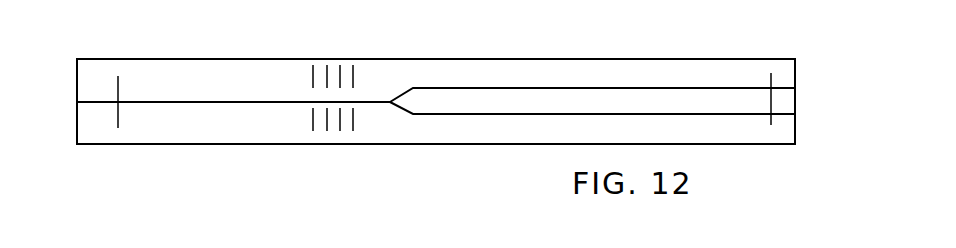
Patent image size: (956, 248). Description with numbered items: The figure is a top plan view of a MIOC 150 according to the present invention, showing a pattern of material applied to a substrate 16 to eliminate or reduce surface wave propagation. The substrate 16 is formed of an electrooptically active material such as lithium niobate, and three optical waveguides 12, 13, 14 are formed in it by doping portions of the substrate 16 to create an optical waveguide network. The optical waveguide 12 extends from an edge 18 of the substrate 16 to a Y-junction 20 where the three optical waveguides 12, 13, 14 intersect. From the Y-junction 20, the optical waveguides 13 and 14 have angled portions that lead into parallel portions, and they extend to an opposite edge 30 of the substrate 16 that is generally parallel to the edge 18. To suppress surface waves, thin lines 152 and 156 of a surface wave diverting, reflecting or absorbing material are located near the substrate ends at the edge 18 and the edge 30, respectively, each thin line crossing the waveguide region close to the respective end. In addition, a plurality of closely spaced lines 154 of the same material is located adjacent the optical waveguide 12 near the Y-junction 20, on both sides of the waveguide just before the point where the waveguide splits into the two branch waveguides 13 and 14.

The MIOC 150 is at (256, 164).
The thin line 152 is at (118, 85).
The closely spaced lines 154 is at (306, 82).
The thin line 156 is at (771, 80).
The optical waveguide 14 is at (443, 88).
The optical waveguide 13 is at (500, 114).
The optical waveguide 12 is at (167, 103).
The substrate 16 is at (277, 144).
The edge 18 is at (77, 131).
The Y-junction 20 is at (390, 104).
The edge 30 is at (795, 127).